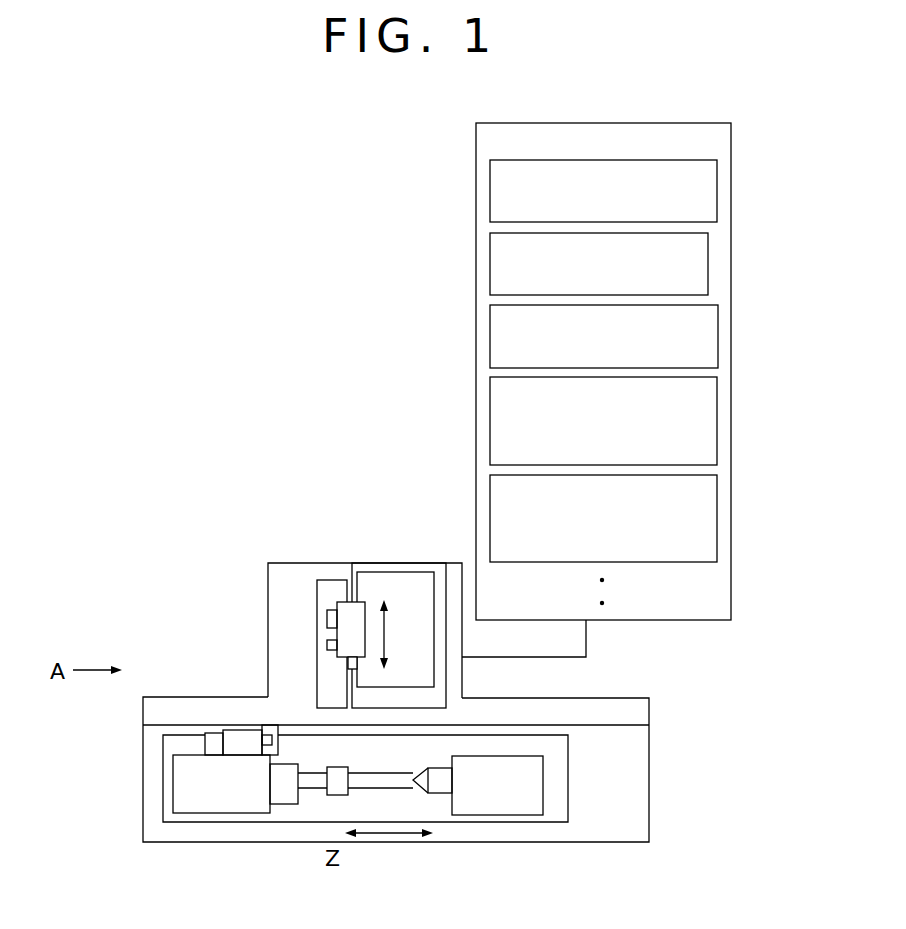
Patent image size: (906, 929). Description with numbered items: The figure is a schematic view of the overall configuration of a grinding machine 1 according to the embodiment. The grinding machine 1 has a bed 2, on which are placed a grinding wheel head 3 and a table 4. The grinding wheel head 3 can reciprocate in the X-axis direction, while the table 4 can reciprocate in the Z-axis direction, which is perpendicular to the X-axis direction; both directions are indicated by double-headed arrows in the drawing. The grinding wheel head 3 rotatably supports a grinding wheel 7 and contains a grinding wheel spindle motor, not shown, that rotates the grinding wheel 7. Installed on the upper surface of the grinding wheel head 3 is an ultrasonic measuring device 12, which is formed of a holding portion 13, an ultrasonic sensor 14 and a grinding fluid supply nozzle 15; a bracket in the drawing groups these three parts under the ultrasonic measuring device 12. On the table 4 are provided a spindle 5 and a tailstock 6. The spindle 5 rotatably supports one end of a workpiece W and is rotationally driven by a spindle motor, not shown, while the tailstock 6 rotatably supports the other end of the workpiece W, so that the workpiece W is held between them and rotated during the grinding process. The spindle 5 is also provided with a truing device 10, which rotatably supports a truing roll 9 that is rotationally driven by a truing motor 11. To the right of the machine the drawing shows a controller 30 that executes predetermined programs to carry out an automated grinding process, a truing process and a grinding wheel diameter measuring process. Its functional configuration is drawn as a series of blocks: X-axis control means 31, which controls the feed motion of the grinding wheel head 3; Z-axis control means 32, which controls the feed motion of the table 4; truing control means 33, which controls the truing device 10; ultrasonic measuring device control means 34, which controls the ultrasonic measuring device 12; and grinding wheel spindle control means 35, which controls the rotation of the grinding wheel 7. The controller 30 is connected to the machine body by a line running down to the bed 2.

The grinding machine 1 is at (118, 328).
The bed 2 is at (277, 675).
The grinding wheel head 3 is at (387, 583).
The table 4 is at (560, 787).
The spindle 5 is at (212, 798).
The tailstock 6 is at (503, 797).
The grinding wheel 7 is at (327, 680).
The truing roll 9 is at (273, 728).
The truing device 10 is at (240, 737).
The truing motor 11 is at (203, 748).
The ultrasonic measuring device 12 is at (335, 478).
The holding portion 13 is at (344, 610).
The ultrasonic sensor 14 is at (327, 645).
The grinding fluid supply nozzle 15 is at (327, 618).
The workpiece W is at (337, 797).
The controller 30 is at (717, 142).
The X-axis control means 31 is at (708, 200).
The Z-axis control means 32 is at (700, 263).
The truing control means 33 is at (710, 340).
The ultrasonic measuring device control means 34 is at (710, 402).
The grinding wheel spindle control means 35 is at (718, 513).